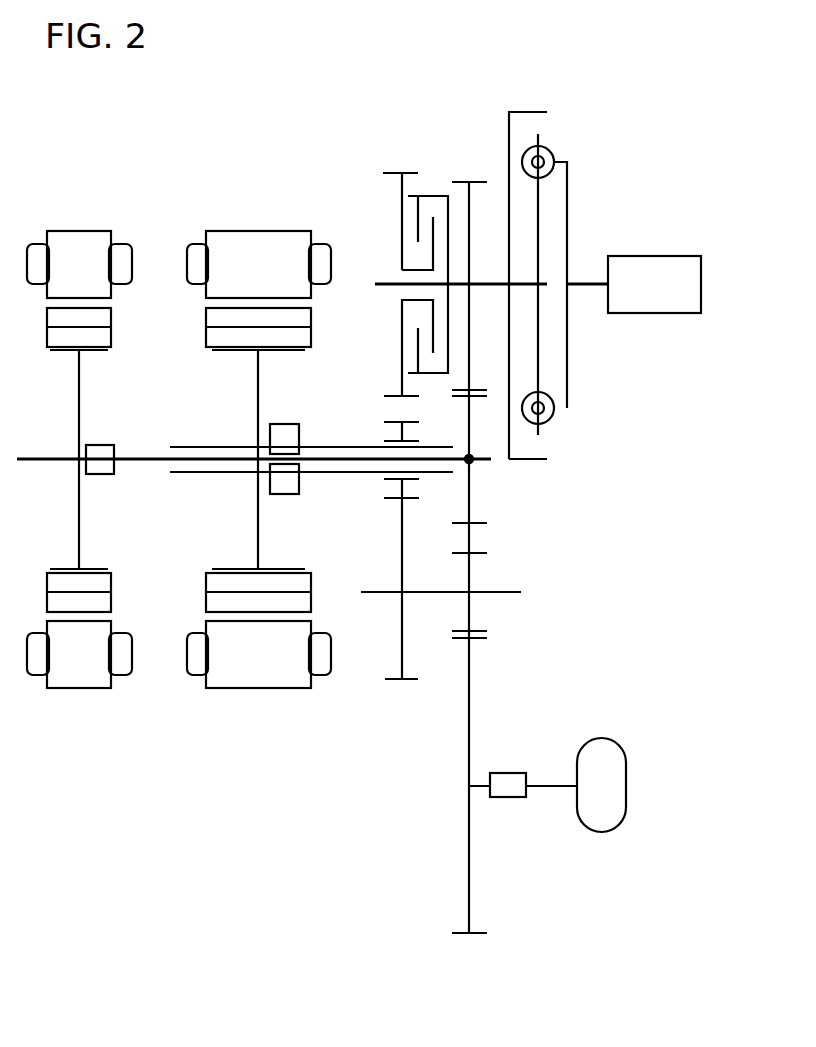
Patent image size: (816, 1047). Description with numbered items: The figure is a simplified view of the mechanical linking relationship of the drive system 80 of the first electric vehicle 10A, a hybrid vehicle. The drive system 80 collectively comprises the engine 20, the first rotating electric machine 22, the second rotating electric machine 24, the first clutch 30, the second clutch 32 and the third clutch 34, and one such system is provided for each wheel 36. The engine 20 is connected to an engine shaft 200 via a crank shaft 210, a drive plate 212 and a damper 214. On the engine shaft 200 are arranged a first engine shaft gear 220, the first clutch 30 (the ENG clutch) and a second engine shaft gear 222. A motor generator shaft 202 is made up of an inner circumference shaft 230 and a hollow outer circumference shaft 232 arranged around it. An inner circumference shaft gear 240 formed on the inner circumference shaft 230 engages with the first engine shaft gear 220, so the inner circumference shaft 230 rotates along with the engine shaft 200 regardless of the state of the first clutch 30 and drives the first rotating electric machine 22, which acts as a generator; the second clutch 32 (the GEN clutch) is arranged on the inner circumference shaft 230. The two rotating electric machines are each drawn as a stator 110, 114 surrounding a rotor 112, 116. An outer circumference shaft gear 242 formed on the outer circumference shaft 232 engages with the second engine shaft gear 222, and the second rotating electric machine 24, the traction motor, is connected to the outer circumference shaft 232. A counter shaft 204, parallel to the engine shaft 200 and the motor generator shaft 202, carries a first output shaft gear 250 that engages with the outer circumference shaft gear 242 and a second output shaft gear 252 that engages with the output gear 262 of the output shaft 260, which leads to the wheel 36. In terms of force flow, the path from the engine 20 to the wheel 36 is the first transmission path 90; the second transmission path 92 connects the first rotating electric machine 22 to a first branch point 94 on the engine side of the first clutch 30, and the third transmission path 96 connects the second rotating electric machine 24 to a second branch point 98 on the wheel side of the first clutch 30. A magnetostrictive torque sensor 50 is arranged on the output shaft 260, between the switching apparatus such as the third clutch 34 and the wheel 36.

The first electric vehicle 10A is at (210, 96).
The engine 20 is at (654, 256).
The first rotating electric machine 22 is at (127, 180).
The second rotating electric machine 24 is at (311, 180).
The first clutch 30 is at (432, 183).
The second clutch 32 is at (90, 445).
The third clutch 34 is at (280, 424).
The wheel 36 is at (602, 835).
The torque sensor 50 is at (503, 773).
The drive system 80 is at (259, 751).
The first transmission path 90 is at (487, 681).
The second transmission path 92 is at (167, 476).
The first branch point 94 is at (472, 463).
The third transmission path 96 is at (340, 433).
The second branch point 98 is at (399, 343).
The stator 110 is at (94, 238).
The rotor 112 is at (66, 315).
The stator 114 is at (279, 238).
The rotor 116 is at (250, 315).
The engine shaft 200 is at (388, 284).
The motor generator shaft 202 is at (255, 403).
The counter shaft 204 is at (509, 596).
The crank shaft 210 is at (577, 284).
The drive plate 212 is at (570, 175).
The damper 214 is at (543, 147).
The first engine shaft gear 220 is at (457, 182).
The second engine shaft gear 222 is at (397, 173).
The inner circumference shaft 230 is at (180, 457).
The outer circumference shaft 232 is at (228, 447).
The inner circumference shaft gear 240 is at (482, 527).
The outer circumference shaft gear 242 is at (412, 405).
The first output shaft gear 250 is at (395, 683).
The second output shaft gear 252 is at (483, 550).
The output shaft 260 is at (547, 790).
The output gear 262 is at (462, 937).